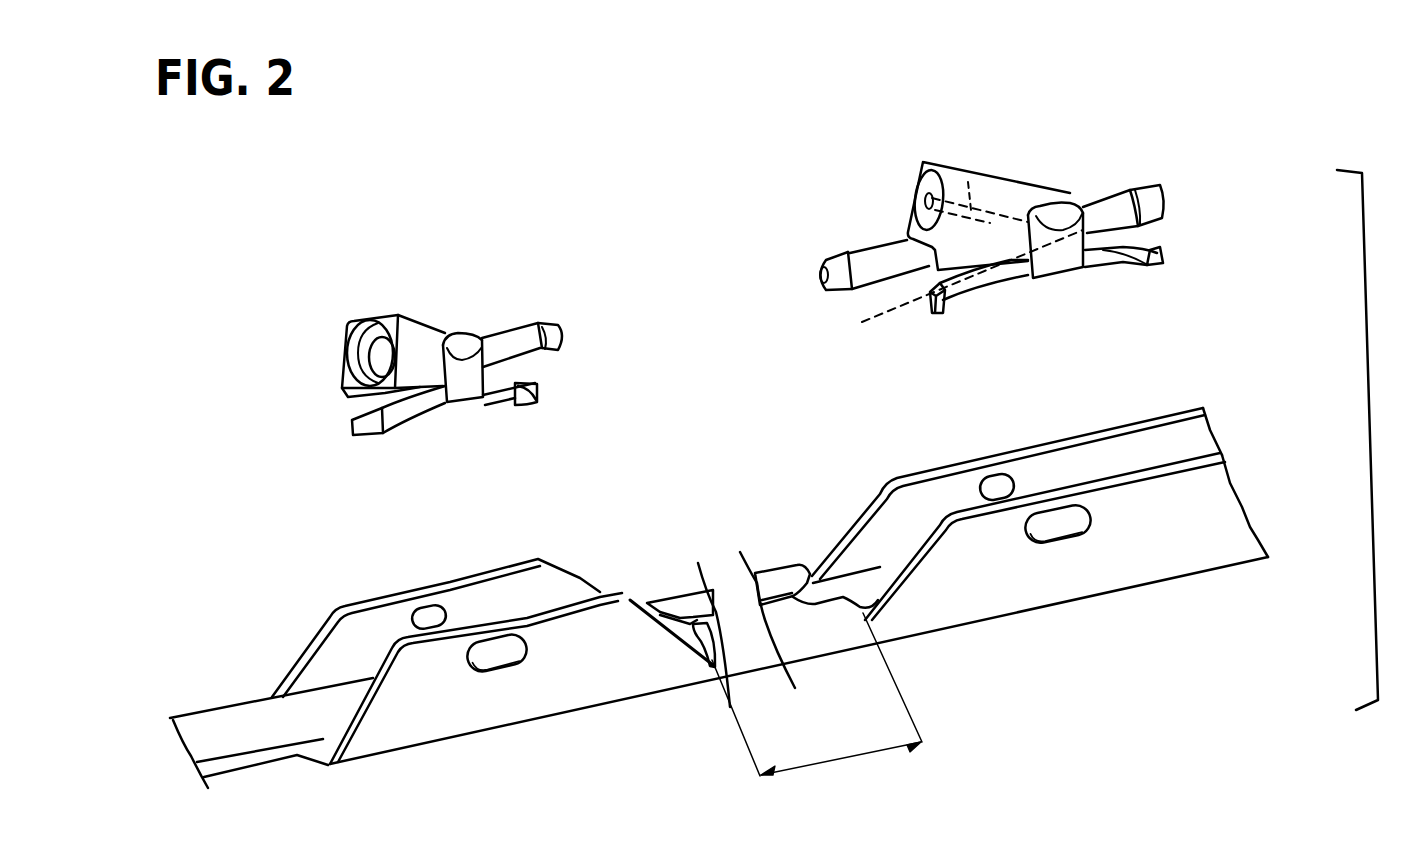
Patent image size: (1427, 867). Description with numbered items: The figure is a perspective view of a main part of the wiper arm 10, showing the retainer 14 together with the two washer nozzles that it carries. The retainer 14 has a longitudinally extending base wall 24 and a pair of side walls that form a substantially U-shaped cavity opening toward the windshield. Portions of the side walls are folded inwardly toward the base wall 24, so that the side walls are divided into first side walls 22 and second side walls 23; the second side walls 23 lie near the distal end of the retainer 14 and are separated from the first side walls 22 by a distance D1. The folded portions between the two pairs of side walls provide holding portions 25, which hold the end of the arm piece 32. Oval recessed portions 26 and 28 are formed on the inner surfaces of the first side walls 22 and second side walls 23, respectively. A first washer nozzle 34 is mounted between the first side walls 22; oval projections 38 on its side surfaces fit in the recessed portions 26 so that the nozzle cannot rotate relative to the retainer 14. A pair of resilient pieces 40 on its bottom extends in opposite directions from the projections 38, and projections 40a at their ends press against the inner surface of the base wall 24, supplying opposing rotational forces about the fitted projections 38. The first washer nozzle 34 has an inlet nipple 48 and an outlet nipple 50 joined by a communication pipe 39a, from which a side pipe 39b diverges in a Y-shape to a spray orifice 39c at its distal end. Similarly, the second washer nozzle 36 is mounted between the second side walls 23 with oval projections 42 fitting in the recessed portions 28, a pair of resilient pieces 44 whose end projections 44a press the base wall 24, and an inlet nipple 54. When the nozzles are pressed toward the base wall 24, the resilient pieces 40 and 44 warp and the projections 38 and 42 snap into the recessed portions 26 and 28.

The mounting structure assembly 10 is at (659, 222).
The retainer 14 is at (953, 628).
The first side walls 22 is at (883, 490).
The second side walls 23 is at (310, 643).
The base wall 24 is at (862, 585).
The holding portions 25 is at (777, 574).
The recessed portions 26 is at (993, 478).
The recessed portions 28 is at (424, 602).
The arm piece 32 is at (238, 715).
The first washer nozzle 34 is at (976, 170).
The second washer nozzle 36 is at (387, 313).
The projections 38 is at (1050, 207).
The communication pipe 39a is at (960, 290).
The side pipe 39b is at (968, 182).
The spray orifice 39c is at (926, 200).
The resilient pieces 40 is at (987, 282).
The projections 40a is at (937, 314).
The projections 42 is at (463, 337).
The resilient pieces 44 is at (407, 410).
The projections 44a is at (370, 437).
The inlet nipple 48 is at (1145, 185).
The outlet nipple 50 is at (840, 253).
The inlet nipple 54 is at (540, 323).
The distance D1 is at (817, 702).